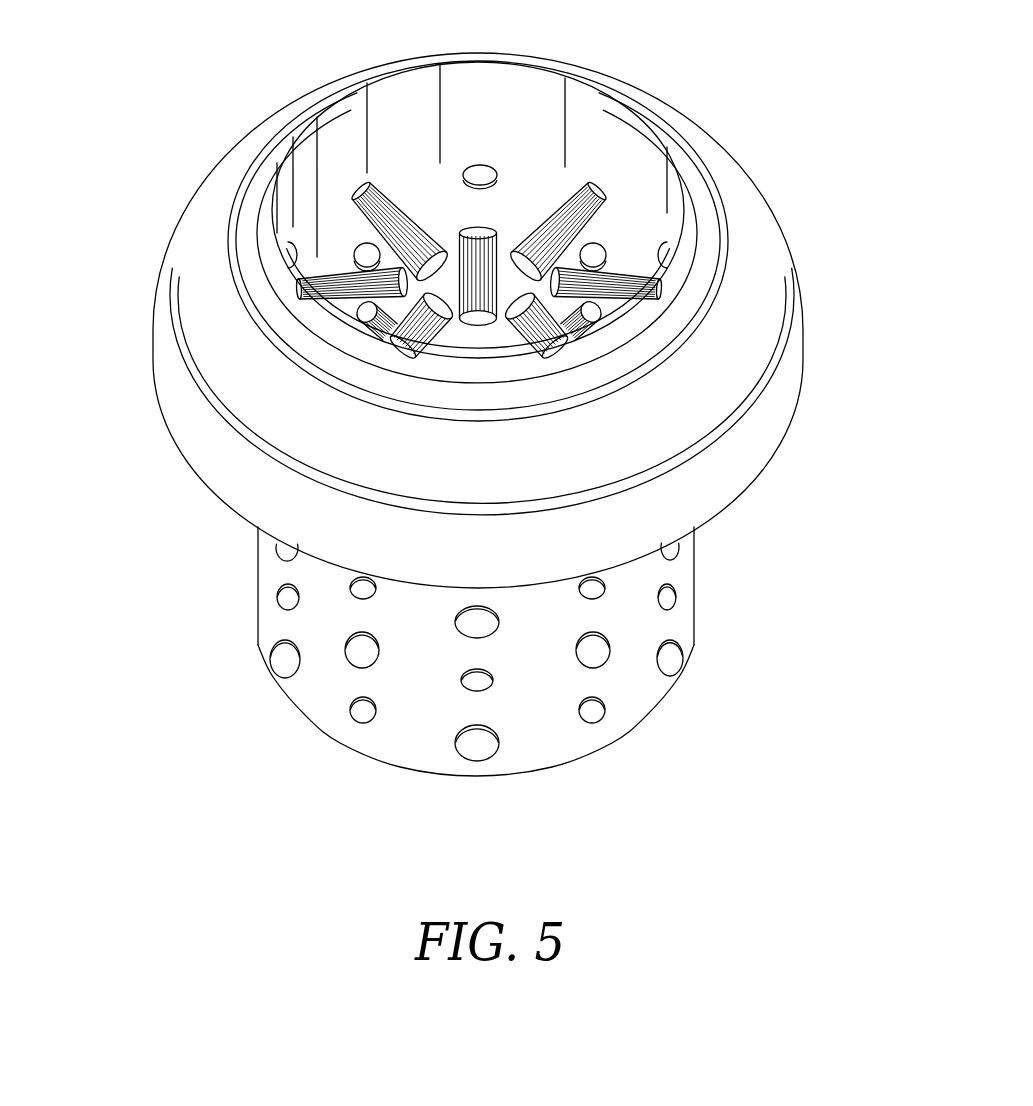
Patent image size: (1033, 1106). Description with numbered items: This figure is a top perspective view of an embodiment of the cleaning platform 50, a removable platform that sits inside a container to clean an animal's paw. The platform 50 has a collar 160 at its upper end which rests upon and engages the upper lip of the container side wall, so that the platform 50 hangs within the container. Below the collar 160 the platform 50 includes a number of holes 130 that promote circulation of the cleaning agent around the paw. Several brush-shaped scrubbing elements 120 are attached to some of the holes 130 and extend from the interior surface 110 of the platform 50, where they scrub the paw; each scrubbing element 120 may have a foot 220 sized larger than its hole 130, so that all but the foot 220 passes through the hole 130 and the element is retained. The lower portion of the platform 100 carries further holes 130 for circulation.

The cleaning platform 50 is at (805, 302).
The perforated cylindrical body 100 is at (700, 562).
The interior surface 110 is at (582, 118).
The scrubbing elements 120 is at (360, 180).
The holes 130 is at (360, 248).
The collar 160 is at (160, 340).
The foot 220 is at (487, 748).